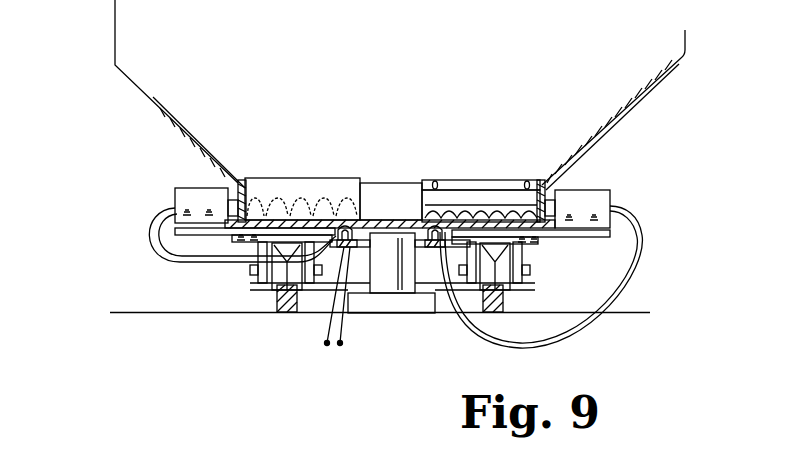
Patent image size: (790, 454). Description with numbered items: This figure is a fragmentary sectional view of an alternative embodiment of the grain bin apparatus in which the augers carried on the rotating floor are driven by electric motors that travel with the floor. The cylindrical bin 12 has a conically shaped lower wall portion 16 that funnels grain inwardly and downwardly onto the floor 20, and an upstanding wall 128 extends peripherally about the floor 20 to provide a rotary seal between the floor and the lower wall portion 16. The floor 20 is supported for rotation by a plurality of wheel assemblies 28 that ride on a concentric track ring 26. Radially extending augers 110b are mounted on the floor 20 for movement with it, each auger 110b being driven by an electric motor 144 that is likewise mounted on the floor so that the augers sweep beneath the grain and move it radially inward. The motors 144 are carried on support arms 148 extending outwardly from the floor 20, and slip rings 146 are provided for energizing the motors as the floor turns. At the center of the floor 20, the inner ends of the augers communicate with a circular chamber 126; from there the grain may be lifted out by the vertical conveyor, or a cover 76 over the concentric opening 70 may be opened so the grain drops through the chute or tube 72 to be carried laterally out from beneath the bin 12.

The cylindrical bin 12 is at (113, 43).
The lower wall portion 16 is at (192, 135).
The upstanding wall 128 is at (243, 181).
The electric motor 144 is at (187, 195).
The floor 20 is at (278, 217).
The auger 110b is at (327, 181).
The concentric opening 70 is at (375, 217).
The circular chamber 126 is at (392, 233).
The cover 76 is at (402, 240).
The support arm 148 is at (193, 232).
The wheel assembly 28 is at (247, 288).
The chute or tube 72 is at (391, 283).
The slip rings 146 is at (432, 257).
The track ring 26 is at (495, 313).